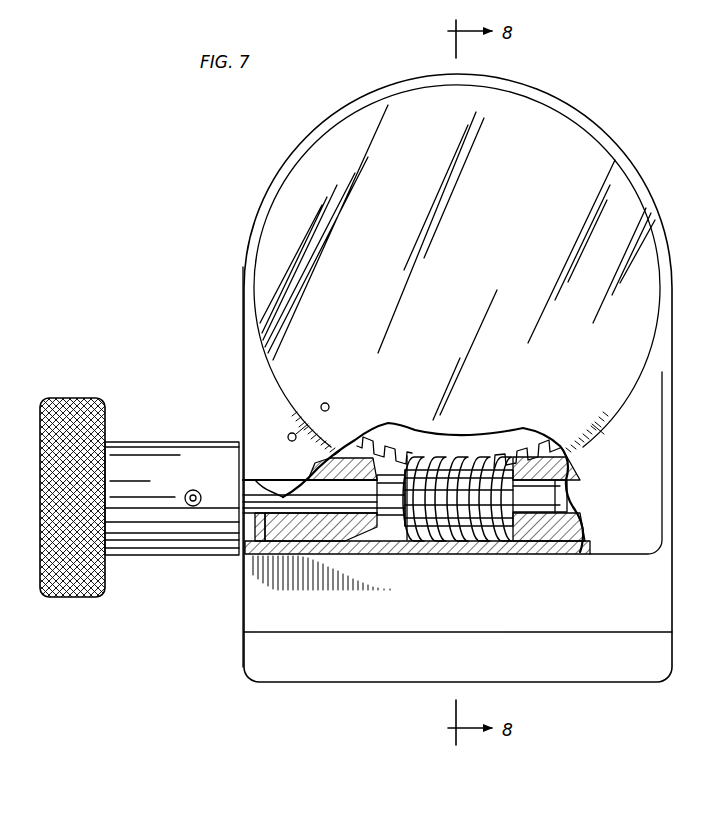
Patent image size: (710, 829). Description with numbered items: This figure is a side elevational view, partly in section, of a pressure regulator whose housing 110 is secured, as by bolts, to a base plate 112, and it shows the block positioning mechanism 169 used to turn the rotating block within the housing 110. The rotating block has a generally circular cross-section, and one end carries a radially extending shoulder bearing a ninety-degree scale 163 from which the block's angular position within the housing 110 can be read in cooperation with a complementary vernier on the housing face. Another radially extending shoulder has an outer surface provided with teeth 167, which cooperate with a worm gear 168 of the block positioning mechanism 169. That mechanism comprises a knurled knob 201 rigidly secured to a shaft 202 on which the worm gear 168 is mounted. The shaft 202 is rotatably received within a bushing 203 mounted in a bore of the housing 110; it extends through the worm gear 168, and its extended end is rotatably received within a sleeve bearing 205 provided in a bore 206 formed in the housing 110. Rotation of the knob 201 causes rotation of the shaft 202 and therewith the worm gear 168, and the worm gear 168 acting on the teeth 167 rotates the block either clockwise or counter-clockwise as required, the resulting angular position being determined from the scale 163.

The housing 110 is at (276, 190).
The base plate 112 is at (258, 654).
The scale 163 is at (419, 472).
The teeth 167 is at (398, 446).
The worm gear 168 is at (478, 538).
The block positioning mechanism 169 is at (446, 562).
The knurled knob 201 is at (96, 400).
The shaft 202 is at (255, 480).
The bushing 203 is at (341, 508).
The sleeve bearing 205 is at (560, 505).
The bore 206 is at (572, 507).